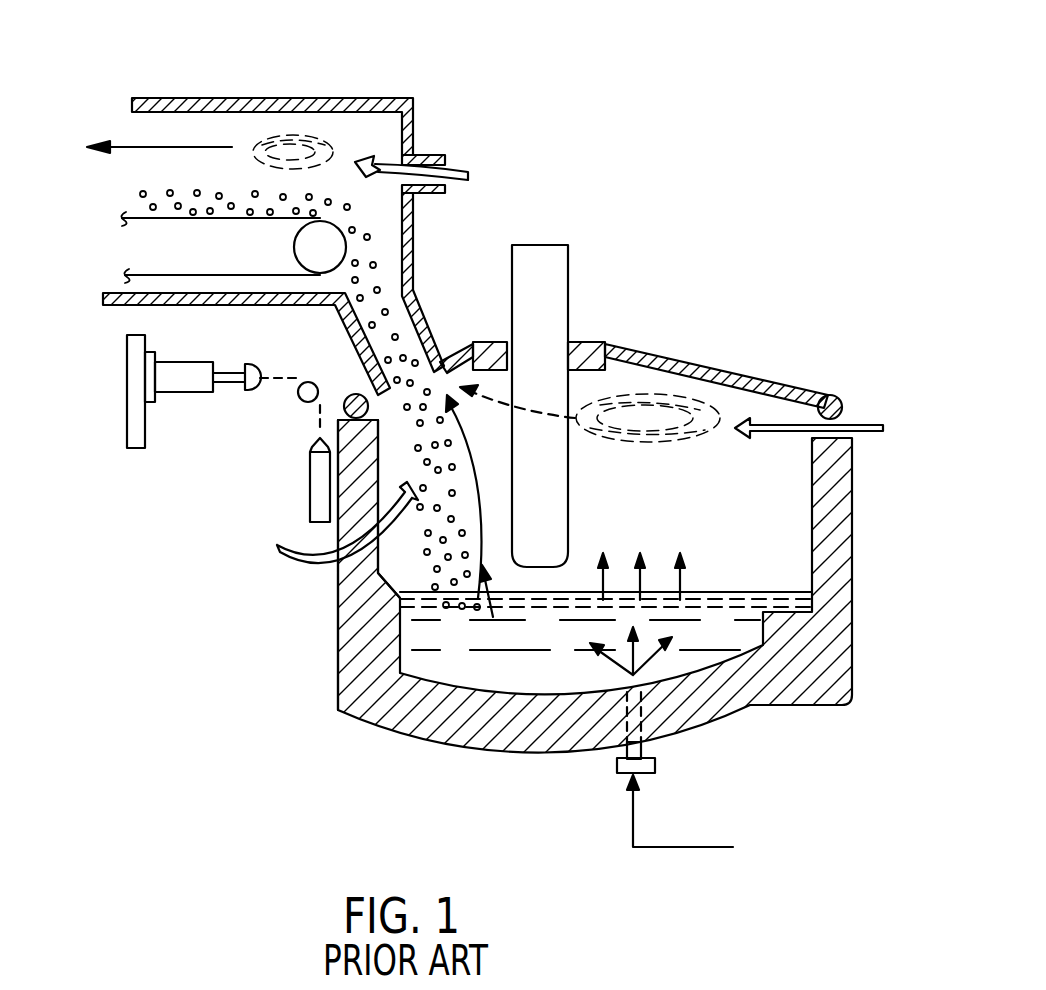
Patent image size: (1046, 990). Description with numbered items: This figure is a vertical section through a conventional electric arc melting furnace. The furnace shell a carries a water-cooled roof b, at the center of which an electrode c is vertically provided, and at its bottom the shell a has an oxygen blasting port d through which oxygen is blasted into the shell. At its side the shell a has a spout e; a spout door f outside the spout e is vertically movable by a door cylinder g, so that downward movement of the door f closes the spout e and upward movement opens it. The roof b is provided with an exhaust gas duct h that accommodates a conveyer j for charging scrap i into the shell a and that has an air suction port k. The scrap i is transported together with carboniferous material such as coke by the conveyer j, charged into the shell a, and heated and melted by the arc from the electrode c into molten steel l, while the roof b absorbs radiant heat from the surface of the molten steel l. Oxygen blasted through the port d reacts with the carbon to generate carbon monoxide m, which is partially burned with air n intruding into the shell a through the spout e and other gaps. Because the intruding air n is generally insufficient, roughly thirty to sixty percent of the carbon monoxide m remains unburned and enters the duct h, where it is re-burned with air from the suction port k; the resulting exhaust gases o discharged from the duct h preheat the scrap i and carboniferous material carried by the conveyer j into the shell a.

The furnace shell a is at (840, 524).
The water-cooled roof b is at (686, 367).
The electrode c is at (567, 240).
The oxygen blasting port d is at (660, 768).
The spout e is at (362, 556).
The spout door f is at (310, 483).
The door cylinder g is at (185, 380).
The exhaust gas duct h is at (222, 98).
The scrap i is at (180, 205).
The conveyer j is at (165, 243).
The air suction port k is at (447, 160).
The molten steel l is at (542, 635).
The carbon monoxide m is at (690, 575).
The air n is at (876, 425).
The exhaust gases o is at (127, 147).